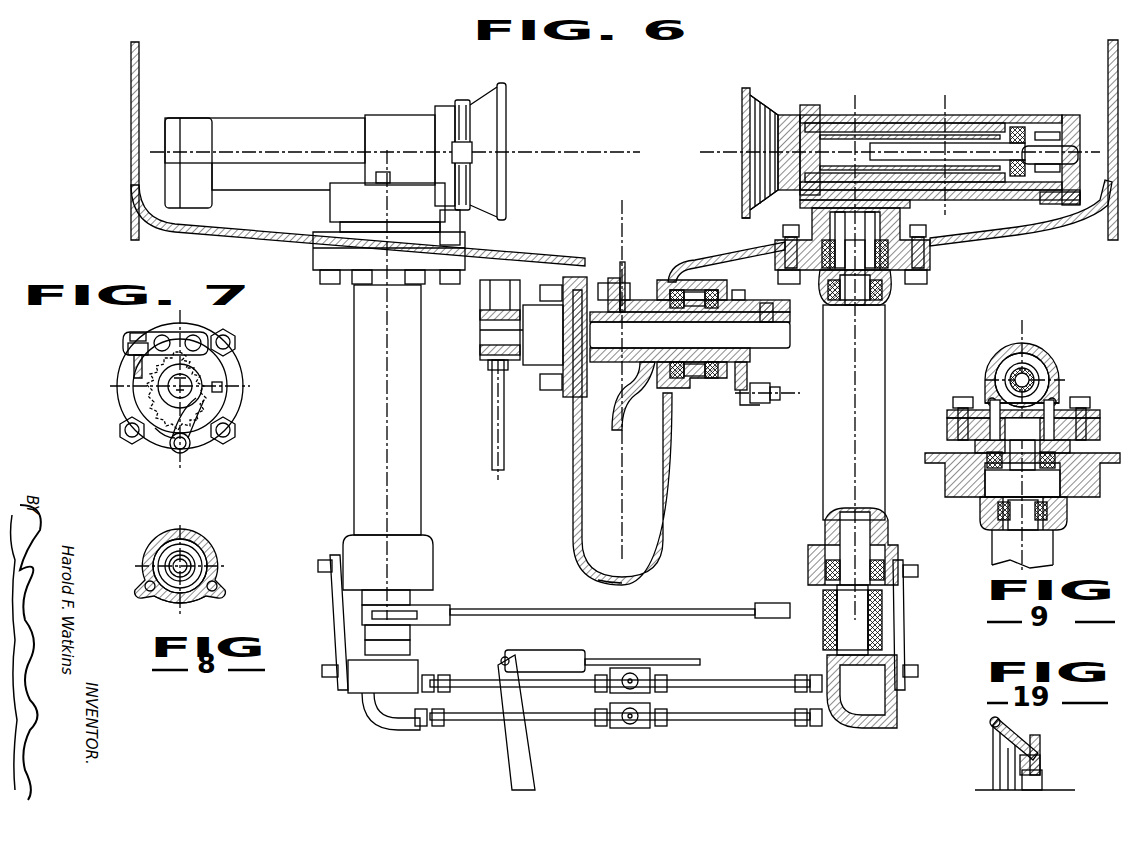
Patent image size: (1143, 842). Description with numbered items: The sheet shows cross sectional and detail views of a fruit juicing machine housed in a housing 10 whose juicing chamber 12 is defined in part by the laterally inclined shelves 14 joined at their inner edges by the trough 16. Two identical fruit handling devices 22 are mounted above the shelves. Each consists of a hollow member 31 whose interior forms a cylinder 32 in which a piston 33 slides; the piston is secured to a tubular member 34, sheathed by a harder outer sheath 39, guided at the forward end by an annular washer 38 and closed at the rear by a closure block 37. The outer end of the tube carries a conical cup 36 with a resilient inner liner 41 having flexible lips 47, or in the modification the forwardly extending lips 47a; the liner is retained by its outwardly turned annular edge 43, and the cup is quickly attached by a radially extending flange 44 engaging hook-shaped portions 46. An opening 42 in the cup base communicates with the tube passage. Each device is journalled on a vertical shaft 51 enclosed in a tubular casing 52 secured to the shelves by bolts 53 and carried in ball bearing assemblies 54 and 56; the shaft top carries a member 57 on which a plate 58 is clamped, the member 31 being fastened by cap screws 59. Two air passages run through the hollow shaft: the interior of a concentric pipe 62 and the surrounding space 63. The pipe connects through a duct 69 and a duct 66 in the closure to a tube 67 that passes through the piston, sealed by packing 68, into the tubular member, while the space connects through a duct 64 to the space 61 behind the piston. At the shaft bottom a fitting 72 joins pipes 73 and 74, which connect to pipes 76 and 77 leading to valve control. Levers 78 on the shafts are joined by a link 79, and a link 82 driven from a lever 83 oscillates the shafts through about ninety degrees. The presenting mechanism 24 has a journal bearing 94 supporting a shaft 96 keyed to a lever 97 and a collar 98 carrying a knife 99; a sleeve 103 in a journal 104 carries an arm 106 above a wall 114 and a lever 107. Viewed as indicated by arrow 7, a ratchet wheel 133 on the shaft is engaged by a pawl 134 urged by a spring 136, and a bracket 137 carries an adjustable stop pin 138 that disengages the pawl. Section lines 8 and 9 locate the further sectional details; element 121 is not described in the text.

In FIG. 6, the arrow 7 is at (780, 375).
In FIG. 6, the section line 8— 8 is at (968, 90).
In FIG. 6, the section line 9— 9 is at (878, 90).
In FIG. 6, the housing 10 is at (131, 62).
In FIG. 6, the chamber 12 is at (614, 179).
In FIG. 6, the inclined shelves 14 is at (258, 228).
In FIG. 9, the inclined shelves 14 is at (1112, 466).
In FIG. 6, the trough 16 is at (578, 492).
In FIG. 6, the fruit handling device 22 is at (274, 117).
In FIG. 8, the fruit handling device 22 is at (212, 534).
In FIG. 9, the fruit handling device 22 is at (1061, 338).
In FIG. 6, the mechanism for presenting halved fruit 24 is at (648, 281).
In FIG. 6, the hollow member 31 is at (320, 117).
In FIG. 8, the hollow member 31 is at (205, 550).
In FIG. 9, the hollow member 31 is at (1035, 352).
In FIG. 6, the cylinder 32 is at (1007, 128).
In FIG. 8, the cylinder 32 is at (184, 540).
In FIG. 6, the piston 33 is at (1030, 128).
In FIG. 6, the tubular member 34 is at (882, 130).
In FIG. 8, the tubular member 34 is at (190, 598).
In FIG. 9, the tubular member 34 is at (1050, 350).
In FIG. 6, the cup 36 is at (506, 104).
In FIG. 19, the cup 36 is at (990, 722).
In FIG. 6, the closure block 37 is at (173, 117).
In FIG. 6, the annular washer 38 is at (812, 108).
In FIG. 6, the outer sheath 39 is at (906, 128).
In FIG. 8, the outer sheath 39 is at (196, 562).
In FIG. 9, the outer sheath 39 is at (1012, 362).
In FIG. 6, the inner liner 41 is at (750, 112).
In FIG. 19, the inner liner 41 is at (995, 736).
In FIG. 6, the opening 42 is at (778, 140).
In FIG. 19, the opening 42 is at (1040, 775).
In FIG. 6, the outwardly turned annular edge 43 is at (437, 124).
In FIG. 19, the outwardly turned annular edge 43 is at (1040, 756).
In FIG. 6, the radially extending flange 44 is at (463, 103).
In FIG. 19, the radially extending flange 44 is at (1040, 740).
In FIG. 6, the hook-shaped portions 46 is at (455, 107).
In FIG. 6, the flexible lips 47 is at (742, 207).
In FIG. 19, the flexible lips 47a is at (1005, 750).
In FIG. 6, the vertical shaft 51 is at (872, 300).
In FIG. 9, the vertical shaft 51 is at (1038, 525).
In FIG. 6, the tubular casing 52 is at (355, 411).
In FIG. 9, the tubular casing 52 is at (1053, 548).
In FIG. 6, the bolts 53 is at (340, 284).
In FIG. 6, the ball bearing assembly 54 is at (890, 272).
In FIG. 9, the ball bearing assembly 54 is at (1065, 503).
In FIG. 6, the ball bearing assembly 56 is at (810, 558).
In FIG. 6, the member 57 is at (790, 228).
In FIG. 9, the member 57 is at (1100, 435).
In FIG. 6, the plate 58 is at (800, 210).
In FIG. 9, the plate 58 is at (1100, 414).
In FIG. 6, the cap screws 59 is at (376, 174).
In FIG. 9, the cap screws 59 is at (953, 402).
In FIG. 6, the space 61 is at (1052, 130).
In FIG. 6, the concentric pipe 62 is at (840, 250).
In FIG. 9, the concentric pipe 62 is at (1012, 466).
In FIG. 6, the space 63 is at (870, 250).
In FIG. 9, the space 63 is at (1035, 470).
In FIG. 8, the duct 64 is at (218, 584).
In FIG. 9, the duct 64 is at (1056, 398).
In FIG. 6, the duct 66 is at (1078, 145).
In FIG. 8, the duct 66 is at (152, 554).
In FIG. 6, the tube 67 is at (952, 148).
In FIG. 8, the tube 67 is at (176, 559).
In FIG. 9, the tube 67 is at (1036, 376).
In FIG. 6, the packing 68 is at (1040, 205).
In FIG. 8, the duct 69 is at (145, 585).
In FIG. 9, the duct 69 is at (990, 400).
In FIG. 6, the fitting 72 is at (360, 690).
In FIG. 6, the pipe 73 is at (733, 722).
In FIG. 6, the pipe 74 is at (733, 680).
In FIG. 6, the pipe 76 is at (622, 725).
In FIG. 6, the pipe 77 is at (630, 670).
In FIG. 6, the lever 78 is at (362, 613).
In FIG. 6, the link 79 is at (490, 609).
In FIG. 6, the link 82 is at (690, 659).
In FIG. 6, the lever 83 is at (512, 740).
In FIG. 6, the journal bearing 94 is at (570, 398).
In FIG. 7, the journal bearing 94 is at (225, 388).
In FIG. 6, the rotatable shaft 96 is at (598, 364).
In FIG. 7, the rotatable shaft 96 is at (195, 385).
In FIG. 6, the lever 97 is at (490, 311).
In FIG. 6, the collar 98 is at (612, 283).
In FIG. 6, the knife 99 is at (626, 265).
In FIG. 6, the sleeve 103 is at (742, 392).
In FIG. 6, the journal 104 is at (700, 393).
In FIG. 6, the arm 106 is at (625, 416).
In FIG. 6, the lever 107 is at (744, 408).
In FIG. 7, the lever 107 is at (190, 445).
In FIG. 6, the wall 114 is at (598, 566).
In FIG. 6, the guide pin 121 is at (492, 402).
In FIG. 6, the ratchet wheel 133 is at (772, 322).
In FIG. 7, the ratchet wheel 133 is at (145, 390).
In FIG. 6, the pawl 134 is at (780, 402).
In FIG. 7, the pawl 134 is at (222, 392).
In FIG. 6, the spring 136 is at (757, 405).
In FIG. 7, the spring 136 is at (160, 438).
In FIG. 6, the bracket 137 is at (724, 298).
In FIG. 7, the bracket 137 is at (188, 342).
In FIG. 7, the adjustable stop pin 138 is at (133, 370).